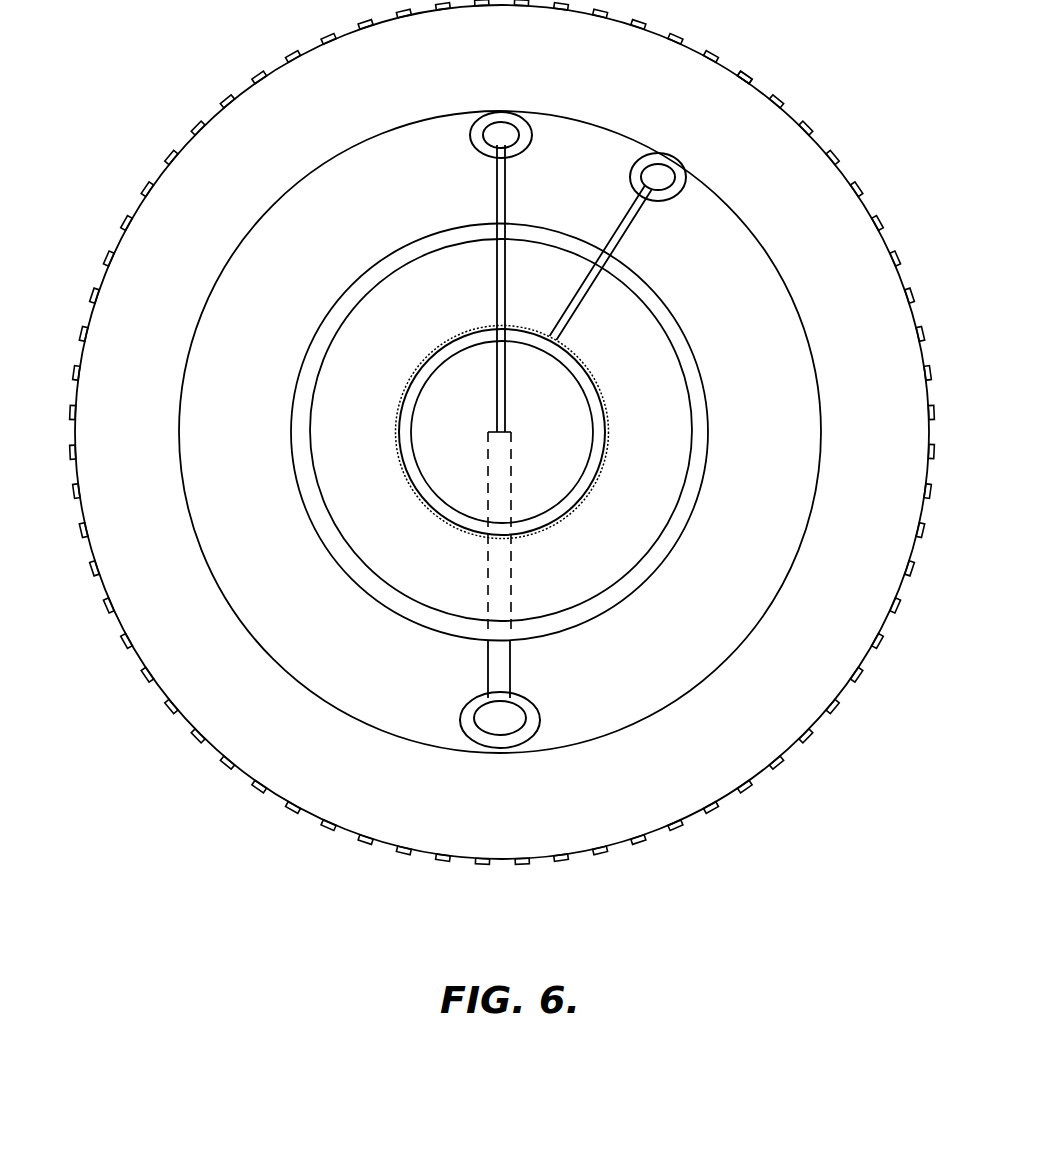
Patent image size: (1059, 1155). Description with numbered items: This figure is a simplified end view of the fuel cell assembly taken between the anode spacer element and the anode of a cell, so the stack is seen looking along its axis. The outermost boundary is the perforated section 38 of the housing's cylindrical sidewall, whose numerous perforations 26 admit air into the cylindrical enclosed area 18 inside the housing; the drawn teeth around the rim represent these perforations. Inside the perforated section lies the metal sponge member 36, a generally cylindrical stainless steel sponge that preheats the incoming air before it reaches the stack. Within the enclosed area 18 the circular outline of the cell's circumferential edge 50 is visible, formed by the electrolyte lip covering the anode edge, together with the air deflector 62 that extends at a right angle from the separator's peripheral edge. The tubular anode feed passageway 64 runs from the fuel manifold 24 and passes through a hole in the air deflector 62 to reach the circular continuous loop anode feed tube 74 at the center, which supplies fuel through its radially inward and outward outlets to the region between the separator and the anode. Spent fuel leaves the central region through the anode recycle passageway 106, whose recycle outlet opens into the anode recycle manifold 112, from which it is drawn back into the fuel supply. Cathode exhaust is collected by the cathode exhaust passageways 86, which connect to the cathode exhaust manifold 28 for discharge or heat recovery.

The cylindrical enclosed area 18 is at (771, 382).
The fuel manifold 24 is at (660, 162).
The perforations 26 is at (790, 118).
The cathode exhaust manifold 28 is at (513, 719).
The metal sponge member 36 is at (831, 247).
The perforated section 38 is at (748, 82).
The circumferential edge 50 is at (688, 460).
The air deflector 62 is at (692, 522).
The tubular anode feed passageway 64 is at (625, 238).
The anode feed tube 74 is at (605, 410).
The cathode exhaust passageways 86 is at (498, 663).
The anode recycle passageway 106 is at (497, 191).
The anode recycle manifold 112 is at (501, 117).